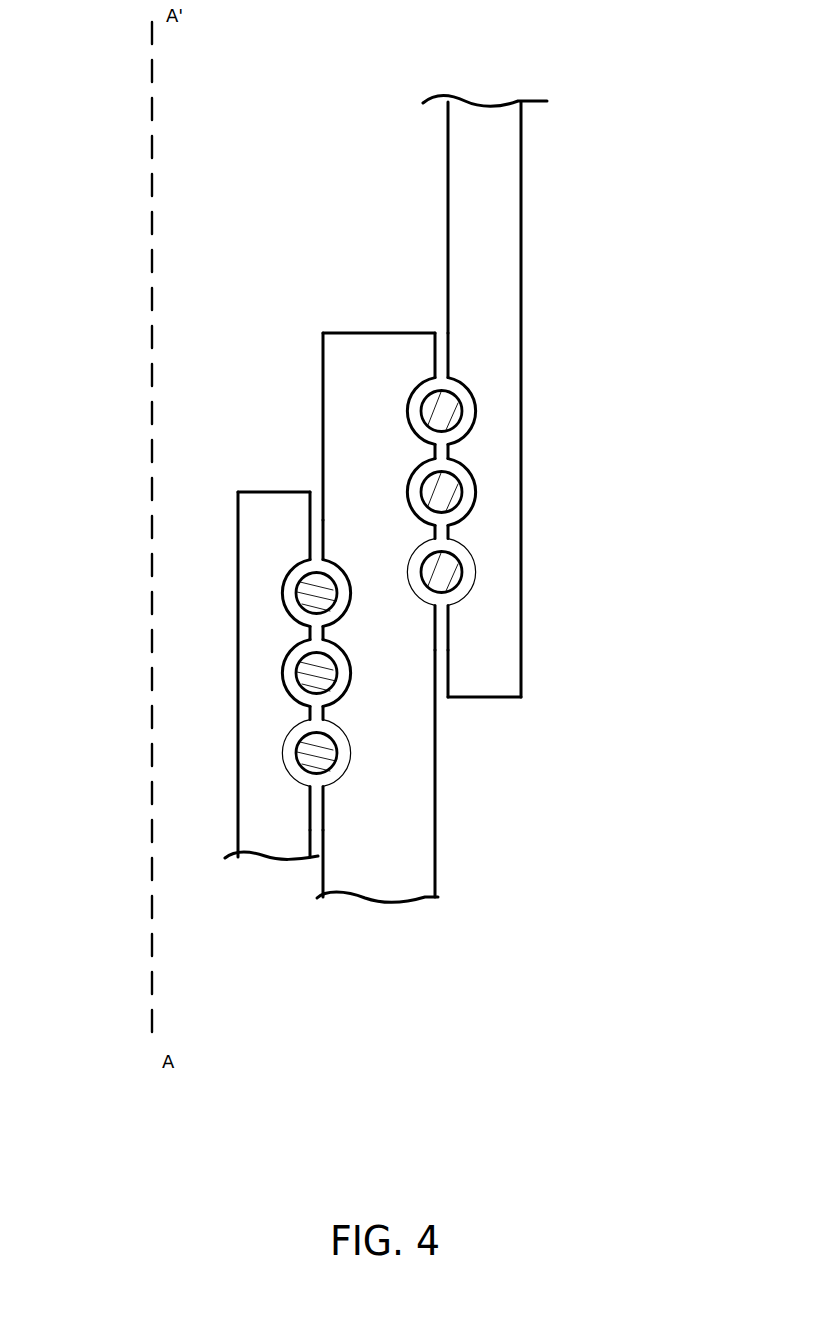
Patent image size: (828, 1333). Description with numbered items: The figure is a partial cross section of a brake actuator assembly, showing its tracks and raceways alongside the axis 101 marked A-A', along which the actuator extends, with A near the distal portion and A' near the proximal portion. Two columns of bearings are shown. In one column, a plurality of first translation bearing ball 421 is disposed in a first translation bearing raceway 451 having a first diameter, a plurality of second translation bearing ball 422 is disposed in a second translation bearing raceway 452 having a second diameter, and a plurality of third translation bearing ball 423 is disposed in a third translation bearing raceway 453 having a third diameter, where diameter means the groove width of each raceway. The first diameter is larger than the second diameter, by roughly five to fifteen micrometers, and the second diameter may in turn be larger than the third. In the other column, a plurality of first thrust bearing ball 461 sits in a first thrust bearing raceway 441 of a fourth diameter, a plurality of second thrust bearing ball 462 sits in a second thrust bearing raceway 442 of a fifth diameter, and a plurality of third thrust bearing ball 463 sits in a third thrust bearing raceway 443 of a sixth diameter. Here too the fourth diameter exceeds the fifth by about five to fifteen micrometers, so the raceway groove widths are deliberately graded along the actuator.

The axis 101 is at (152, 180).
The first translation bearing ball 421 is at (442, 573).
The second translation bearing ball 422 is at (445, 490).
The third translation bearing ball 423 is at (437, 412).
The first thrust bearing raceway 441 is at (315, 782).
The second thrust bearing raceway 442 is at (315, 703).
The third thrust bearing raceway 443 is at (313, 563).
The first translation bearing raceway 451 is at (440, 603).
The second translation bearing raceway 452 is at (447, 521).
The third translation bearing raceway 453 is at (443, 383).
The first thrust bearing ball 461 is at (315, 750).
The second thrust bearing ball 462 is at (310, 673).
The third thrust bearing ball 463 is at (310, 592).